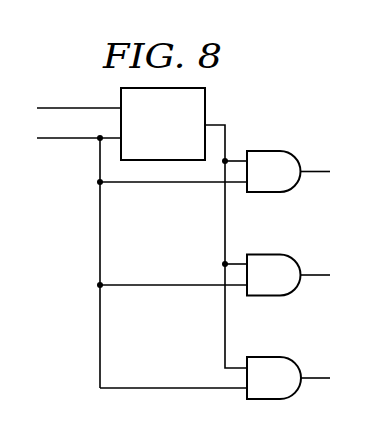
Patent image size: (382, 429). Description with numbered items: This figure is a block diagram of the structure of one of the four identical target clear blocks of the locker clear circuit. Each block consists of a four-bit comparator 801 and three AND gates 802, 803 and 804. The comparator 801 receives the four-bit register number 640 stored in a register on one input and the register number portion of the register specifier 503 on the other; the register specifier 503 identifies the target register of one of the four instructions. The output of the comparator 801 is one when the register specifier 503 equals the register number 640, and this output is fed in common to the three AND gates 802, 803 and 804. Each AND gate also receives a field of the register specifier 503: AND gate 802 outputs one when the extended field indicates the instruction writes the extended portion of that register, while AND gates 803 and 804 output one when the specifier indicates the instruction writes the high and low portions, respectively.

The 4-bit comparator 801 is at (182, 136).
The register number 640 is at (64, 108).
The register specifier 503 is at (65, 140).
The AND gate 802 is at (272, 151).
The AND gate 803 is at (272, 254).
The AND gate 804 is at (272, 357).